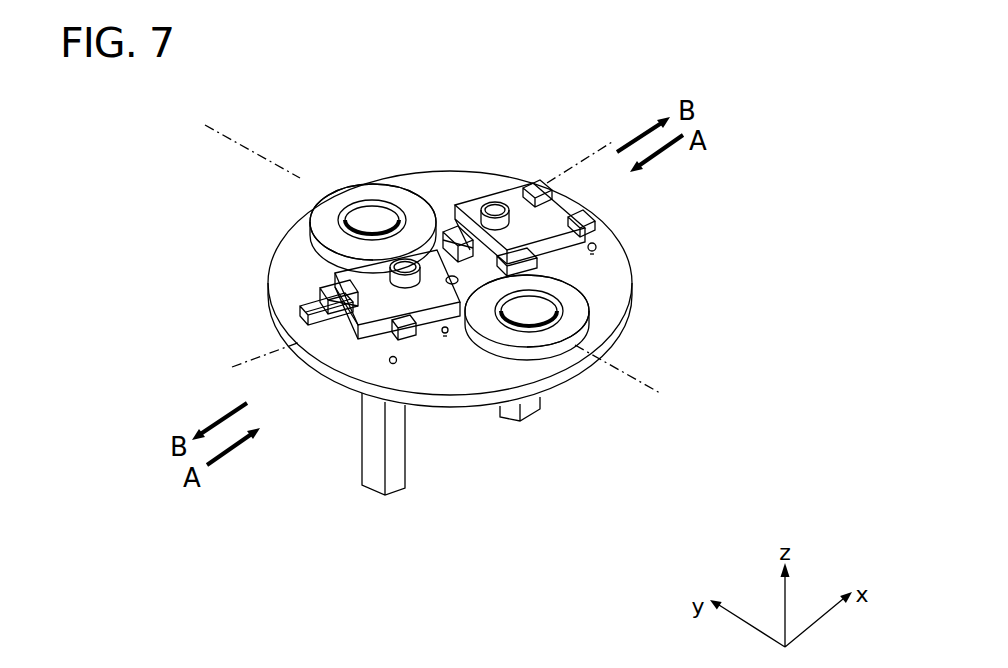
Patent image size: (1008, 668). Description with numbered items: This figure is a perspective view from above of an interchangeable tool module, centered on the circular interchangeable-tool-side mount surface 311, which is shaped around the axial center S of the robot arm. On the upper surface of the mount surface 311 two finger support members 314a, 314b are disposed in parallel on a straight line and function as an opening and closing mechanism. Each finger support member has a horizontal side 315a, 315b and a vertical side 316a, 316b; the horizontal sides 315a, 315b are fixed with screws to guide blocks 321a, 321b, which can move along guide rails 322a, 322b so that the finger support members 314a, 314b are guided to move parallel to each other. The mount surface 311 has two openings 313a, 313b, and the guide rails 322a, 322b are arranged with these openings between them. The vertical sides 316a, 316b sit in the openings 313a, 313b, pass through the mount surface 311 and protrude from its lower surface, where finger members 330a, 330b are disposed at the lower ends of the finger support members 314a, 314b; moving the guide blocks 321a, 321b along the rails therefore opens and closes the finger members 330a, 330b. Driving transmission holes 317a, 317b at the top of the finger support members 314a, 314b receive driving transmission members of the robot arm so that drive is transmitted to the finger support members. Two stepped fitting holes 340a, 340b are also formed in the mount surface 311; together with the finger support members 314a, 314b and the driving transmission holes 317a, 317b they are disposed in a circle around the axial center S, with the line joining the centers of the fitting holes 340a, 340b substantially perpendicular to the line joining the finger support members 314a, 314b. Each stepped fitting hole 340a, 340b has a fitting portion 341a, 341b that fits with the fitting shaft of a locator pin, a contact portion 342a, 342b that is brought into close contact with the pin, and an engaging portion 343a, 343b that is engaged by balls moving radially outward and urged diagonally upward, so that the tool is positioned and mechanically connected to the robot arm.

The interchangeable-tool-side mount surface 311 is at (605, 274).
The opening 313a is at (335, 340).
The opening 313b is at (462, 225).
The finger support member 314a is at (360, 278).
The finger support member 314b is at (508, 198).
The horizontal side 315a is at (345, 310).
The horizontal side 315b is at (505, 268).
The vertical side 316a is at (330, 340).
The vertical side 316b is at (484, 248).
The driving transmission hole 317a is at (395, 262).
The driving transmission hole 317b is at (493, 203).
The guide block 321a is at (320, 322).
The guide block 321b is at (598, 250).
The guide rail 322a is at (303, 316).
The guide rail 322b is at (590, 226).
The finger member 330a is at (377, 470).
The finger member 330b is at (537, 412).
The stepped fitting hole 340a is at (583, 305).
The stepped fitting hole 340b is at (407, 240).
The fitting portion 341a is at (556, 330).
The fitting portion 341b is at (350, 196).
The contact portion 342a is at (528, 337).
The contact portion 342b is at (374, 198).
The engaging portion 343a is at (608, 363).
The engaging portion 343b is at (335, 220).
The axial center S is at (452, 284).